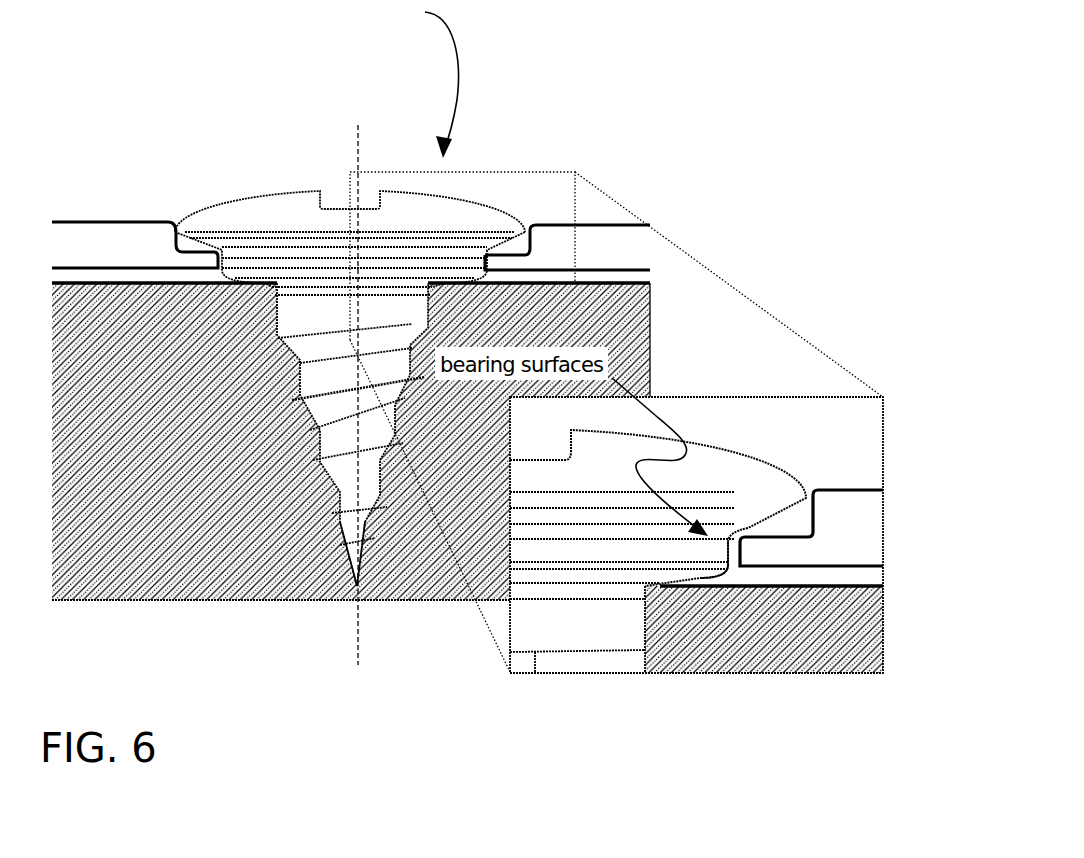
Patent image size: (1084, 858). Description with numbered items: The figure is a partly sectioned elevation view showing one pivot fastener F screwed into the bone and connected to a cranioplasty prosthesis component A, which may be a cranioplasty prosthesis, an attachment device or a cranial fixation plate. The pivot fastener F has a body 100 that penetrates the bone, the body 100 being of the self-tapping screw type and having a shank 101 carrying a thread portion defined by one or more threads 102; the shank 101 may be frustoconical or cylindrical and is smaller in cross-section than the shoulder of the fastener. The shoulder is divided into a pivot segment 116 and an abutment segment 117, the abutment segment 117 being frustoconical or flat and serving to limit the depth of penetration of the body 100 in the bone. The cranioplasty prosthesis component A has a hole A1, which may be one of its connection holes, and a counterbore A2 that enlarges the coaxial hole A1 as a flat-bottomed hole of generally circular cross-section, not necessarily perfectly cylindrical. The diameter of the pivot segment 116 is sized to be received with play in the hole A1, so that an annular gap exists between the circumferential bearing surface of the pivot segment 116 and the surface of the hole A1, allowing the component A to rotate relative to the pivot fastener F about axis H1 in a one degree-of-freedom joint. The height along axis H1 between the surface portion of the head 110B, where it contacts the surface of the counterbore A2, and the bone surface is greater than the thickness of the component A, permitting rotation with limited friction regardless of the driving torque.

The body 100 is at (470, 433).
The shank 101 is at (326, 328).
The thread 102 is at (385, 505).
The pivot segment 116 is at (655, 555).
The abutment segment 117 is at (725, 558).
The surface portion of the head 110B is at (813, 535).
The cranioplasty prosthesis component A is at (62, 222).
The hole A1 is at (471, 248).
The counterbore A2 is at (185, 222).
The axis H1 is at (363, 374).
The pivot fastener F is at (421, 79).